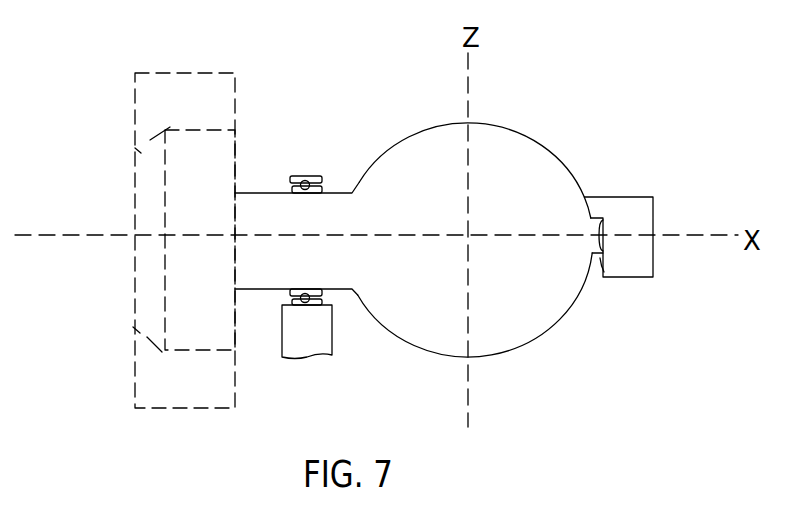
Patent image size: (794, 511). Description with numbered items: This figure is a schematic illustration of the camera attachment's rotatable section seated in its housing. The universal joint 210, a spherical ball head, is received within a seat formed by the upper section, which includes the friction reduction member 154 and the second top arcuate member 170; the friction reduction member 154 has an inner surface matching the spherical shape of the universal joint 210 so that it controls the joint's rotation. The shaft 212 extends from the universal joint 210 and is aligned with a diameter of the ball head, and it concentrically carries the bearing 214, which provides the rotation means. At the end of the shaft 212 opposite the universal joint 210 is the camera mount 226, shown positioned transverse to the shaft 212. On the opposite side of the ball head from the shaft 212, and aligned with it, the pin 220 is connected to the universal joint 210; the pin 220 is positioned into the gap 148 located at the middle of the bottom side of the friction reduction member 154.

The gap 148 is at (598, 263).
The friction reduction member 154 is at (627, 207).
The second top arcuate member 170 is at (306, 343).
The universal joint 210 is at (525, 153).
The shaft 212 is at (322, 273).
The bearing 214 is at (293, 177).
The pin 220 is at (587, 254).
The camera mount 226 is at (148, 277).